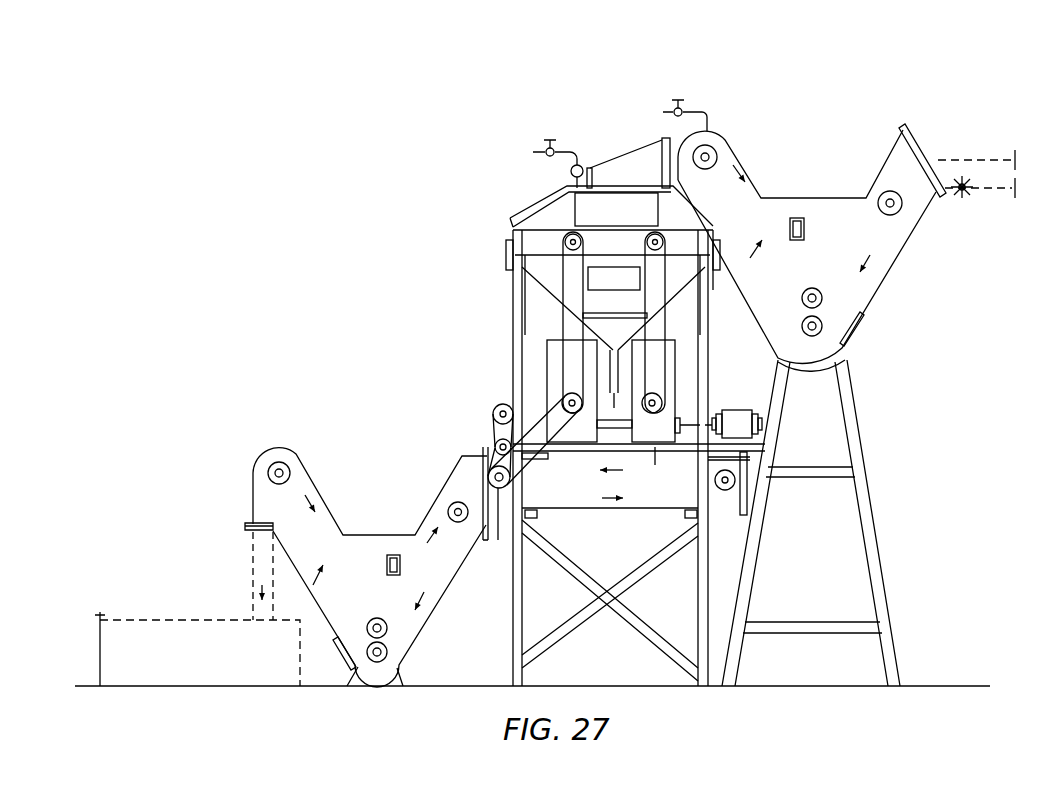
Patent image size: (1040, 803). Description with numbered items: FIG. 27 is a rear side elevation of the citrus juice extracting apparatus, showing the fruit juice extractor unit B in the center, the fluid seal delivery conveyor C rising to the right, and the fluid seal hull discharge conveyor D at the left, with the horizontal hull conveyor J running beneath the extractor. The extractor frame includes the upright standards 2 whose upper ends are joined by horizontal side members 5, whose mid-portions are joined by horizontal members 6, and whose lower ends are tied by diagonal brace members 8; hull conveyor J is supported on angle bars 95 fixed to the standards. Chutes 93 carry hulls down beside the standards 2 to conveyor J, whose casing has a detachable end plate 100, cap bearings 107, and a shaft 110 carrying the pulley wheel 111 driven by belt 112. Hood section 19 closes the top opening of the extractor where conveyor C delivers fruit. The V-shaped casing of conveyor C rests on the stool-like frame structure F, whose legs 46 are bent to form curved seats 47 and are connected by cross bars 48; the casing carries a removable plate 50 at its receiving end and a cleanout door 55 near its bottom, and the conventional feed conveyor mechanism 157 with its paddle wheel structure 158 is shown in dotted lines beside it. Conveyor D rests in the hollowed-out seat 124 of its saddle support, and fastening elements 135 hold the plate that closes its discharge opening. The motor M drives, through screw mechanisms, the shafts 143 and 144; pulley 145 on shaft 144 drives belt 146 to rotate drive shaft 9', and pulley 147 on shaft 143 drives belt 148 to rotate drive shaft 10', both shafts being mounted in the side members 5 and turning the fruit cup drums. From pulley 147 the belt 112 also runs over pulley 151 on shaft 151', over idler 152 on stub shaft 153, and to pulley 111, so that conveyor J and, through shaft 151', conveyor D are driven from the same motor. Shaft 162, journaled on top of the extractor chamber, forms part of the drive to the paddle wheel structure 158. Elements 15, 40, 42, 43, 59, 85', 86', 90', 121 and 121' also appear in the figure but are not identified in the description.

The upright frame standards 2 is at (515, 630).
The horizontal side members 5 is at (99, 649).
The horizontal members 6 is at (660, 465).
The diagonal brace members 8 is at (650, 587).
The drive shaft 9' is at (672, 244).
The drive shaft 10' is at (591, 243).
The hopper cover 15 is at (535, 210).
The hood section 19 is at (625, 168).
The supply pipe 40 is at (540, 150).
The valve 42 is at (556, 149).
The fitting 43 is at (570, 172).
The legs 46 is at (753, 570).
The curved seats 47 is at (813, 368).
The cross bars 48 is at (808, 477).
The removable plate 50 is at (913, 152).
The cleanout door 55 is at (342, 653).
The guide rollers 59 is at (375, 617).
The pipe 85' is at (711, 112).
The valve 86' is at (666, 101).
The sensor 90' is at (618, 398).
The chutes 93 is at (523, 322).
The angle bars 95 is at (537, 516).
The detachable end plate 100 is at (745, 483).
The cap bearings 107 is at (725, 492).
The shaft 110 is at (488, 474).
The pulley wheel 111 is at (498, 541).
The belt 112 is at (527, 465).
The discharge path 121 is at (236, 576).
The discharge path 121' is at (200, 630).
The hollowed-out seat of saddle support 124 is at (400, 677).
The fastening elements 135 is at (245, 527).
The shaft 143 is at (565, 398).
The shaft 144 is at (652, 412).
The pulley 145 is at (660, 402).
The belt 146 is at (672, 381).
The rear sprocket or pulley 147 is at (578, 440).
The belt 148 is at (563, 348).
The pulley 151 is at (475, 432).
The shaft 151' is at (454, 454).
The idler 152 is at (498, 407).
The stub shaft 153 is at (493, 410).
The feed conveyor mechanism 157 is at (993, 160).
The paddle wheel structure 158 is at (963, 197).
The shaft 162 is at (585, 490).
The fruit juice extractor unit B is at (555, 313).
The fluid seal conveyor unit C is at (798, 217).
The fluid seal hull conveyor D is at (378, 545).
The stool-like frame structure F is at (863, 473).
The horizontal hull conveyor J is at (648, 492).
The motor M is at (762, 422).